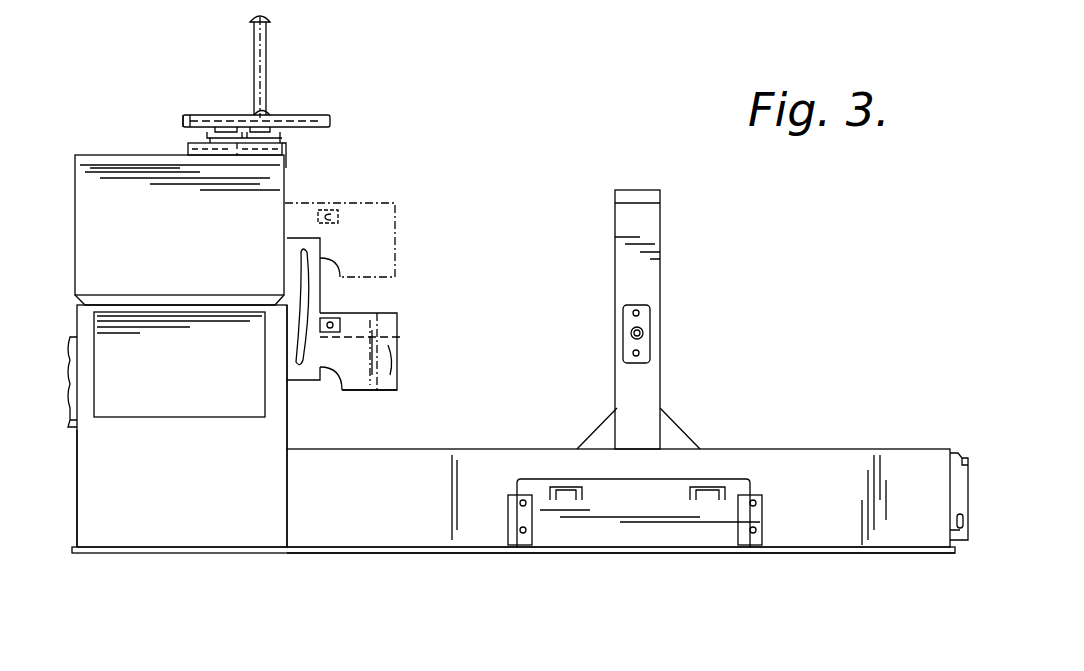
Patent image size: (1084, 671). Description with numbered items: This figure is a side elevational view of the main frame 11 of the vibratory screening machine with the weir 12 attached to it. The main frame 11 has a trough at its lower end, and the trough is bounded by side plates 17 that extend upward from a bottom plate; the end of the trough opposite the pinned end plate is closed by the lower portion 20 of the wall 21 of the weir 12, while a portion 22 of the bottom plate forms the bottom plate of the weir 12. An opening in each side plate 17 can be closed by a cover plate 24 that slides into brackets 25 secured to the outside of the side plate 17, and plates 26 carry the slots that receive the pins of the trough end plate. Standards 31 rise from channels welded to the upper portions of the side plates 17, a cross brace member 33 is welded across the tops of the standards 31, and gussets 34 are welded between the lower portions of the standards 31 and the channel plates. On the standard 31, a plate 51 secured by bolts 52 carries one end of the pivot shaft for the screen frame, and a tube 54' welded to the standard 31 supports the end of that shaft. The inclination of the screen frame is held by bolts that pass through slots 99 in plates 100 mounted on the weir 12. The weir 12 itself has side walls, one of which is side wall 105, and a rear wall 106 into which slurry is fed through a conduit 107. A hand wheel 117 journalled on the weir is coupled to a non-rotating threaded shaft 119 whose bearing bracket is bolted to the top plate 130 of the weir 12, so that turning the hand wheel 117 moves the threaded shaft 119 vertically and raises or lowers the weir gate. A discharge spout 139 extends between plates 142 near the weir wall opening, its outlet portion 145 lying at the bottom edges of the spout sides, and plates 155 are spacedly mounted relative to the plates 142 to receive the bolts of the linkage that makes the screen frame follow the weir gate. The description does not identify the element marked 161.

The main frame 11 is at (805, 553).
The weir 12 is at (112, 155).
The side plates 17 is at (368, 530).
The lower portion of wall 20 is at (288, 508).
The wall of weir 21 is at (288, 415).
The bottom plate portion 22 is at (160, 553).
The cover plate 24 is at (630, 535).
The brackets 25 is at (508, 515).
The plates 26 is at (962, 473).
The standards 31 is at (658, 222).
The cross brace member 33 is at (655, 153).
The gussets 34 is at (605, 426).
The plate 51 is at (655, 320).
The bolts 52 is at (648, 311).
The tube 54' is at (684, 333).
The slots 99 is at (300, 270).
The plates 100 is at (296, 243).
The side wall 105 is at (160, 227).
The rear wall 106 is at (80, 424).
The conduit 107 is at (78, 480).
The hand wheel 117 is at (305, 115).
The threaded shaft 119 is at (272, 50).
The top plate 130 is at (192, 143).
The discharge spout 139 is at (400, 336).
The plates 142 is at (397, 213).
The outlet portion 145 is at (368, 390).
The plates 155 is at (338, 216).
The plate end 161 is at (196, 114).